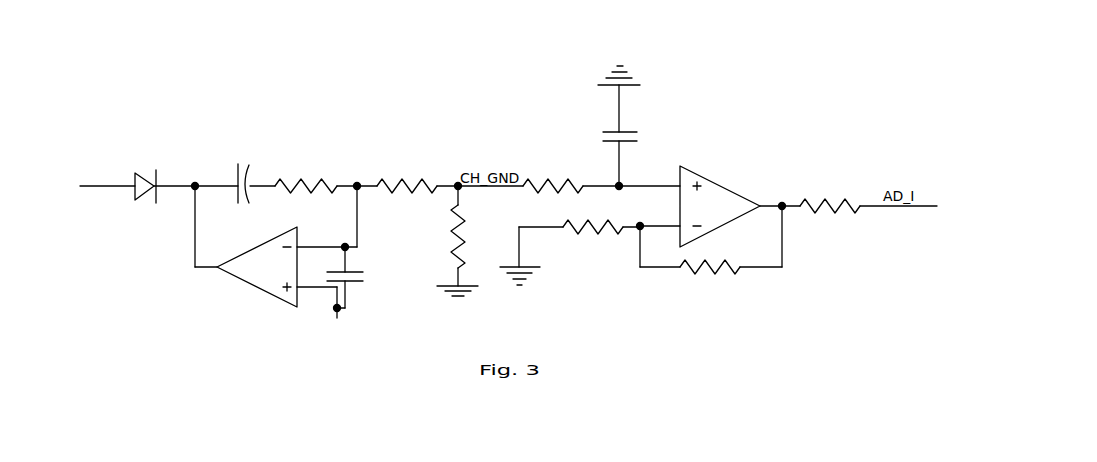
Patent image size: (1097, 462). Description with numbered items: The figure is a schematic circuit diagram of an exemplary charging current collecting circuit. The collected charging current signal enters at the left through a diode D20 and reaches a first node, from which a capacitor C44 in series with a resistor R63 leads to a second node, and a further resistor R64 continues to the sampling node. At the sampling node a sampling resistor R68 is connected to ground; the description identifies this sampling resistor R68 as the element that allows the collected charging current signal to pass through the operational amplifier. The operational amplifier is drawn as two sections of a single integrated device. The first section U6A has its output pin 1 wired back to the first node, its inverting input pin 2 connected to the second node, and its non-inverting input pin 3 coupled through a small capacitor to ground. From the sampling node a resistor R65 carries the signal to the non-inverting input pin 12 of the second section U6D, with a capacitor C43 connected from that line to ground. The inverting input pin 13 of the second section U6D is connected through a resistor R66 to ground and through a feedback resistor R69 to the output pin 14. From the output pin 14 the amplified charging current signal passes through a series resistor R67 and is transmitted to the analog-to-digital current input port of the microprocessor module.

The diode D20 is at (136, 168).
The capacitor C44 is at (223, 173).
The capacitor C43 is at (644, 126).
The resistor R63 is at (306, 174).
The resistor R64 is at (407, 174).
The resistor R65 is at (553, 169).
The resistor R66 is at (570, 252).
The resistor R67 is at (868, 194).
The sampling resistor R68 is at (439, 241).
The resistor R69 is at (711, 243).
The operational amplifier LM324 (section A) U6A is at (279, 252).
The operational amplifier LM324 (section D) U6D is at (719, 189).
The op amp U6A output pin 1 is at (201, 255).
The op amp U6A inverting input pin 2 is at (327, 216).
The op amp U6A non-inverting input pin 3 is at (317, 293).
The op amp U6D non-inverting input pin 12 is at (662, 176).
The op amp U6D inverting input pin 13 is at (659, 219).
The op amp U6D output pin 14 is at (780, 198).